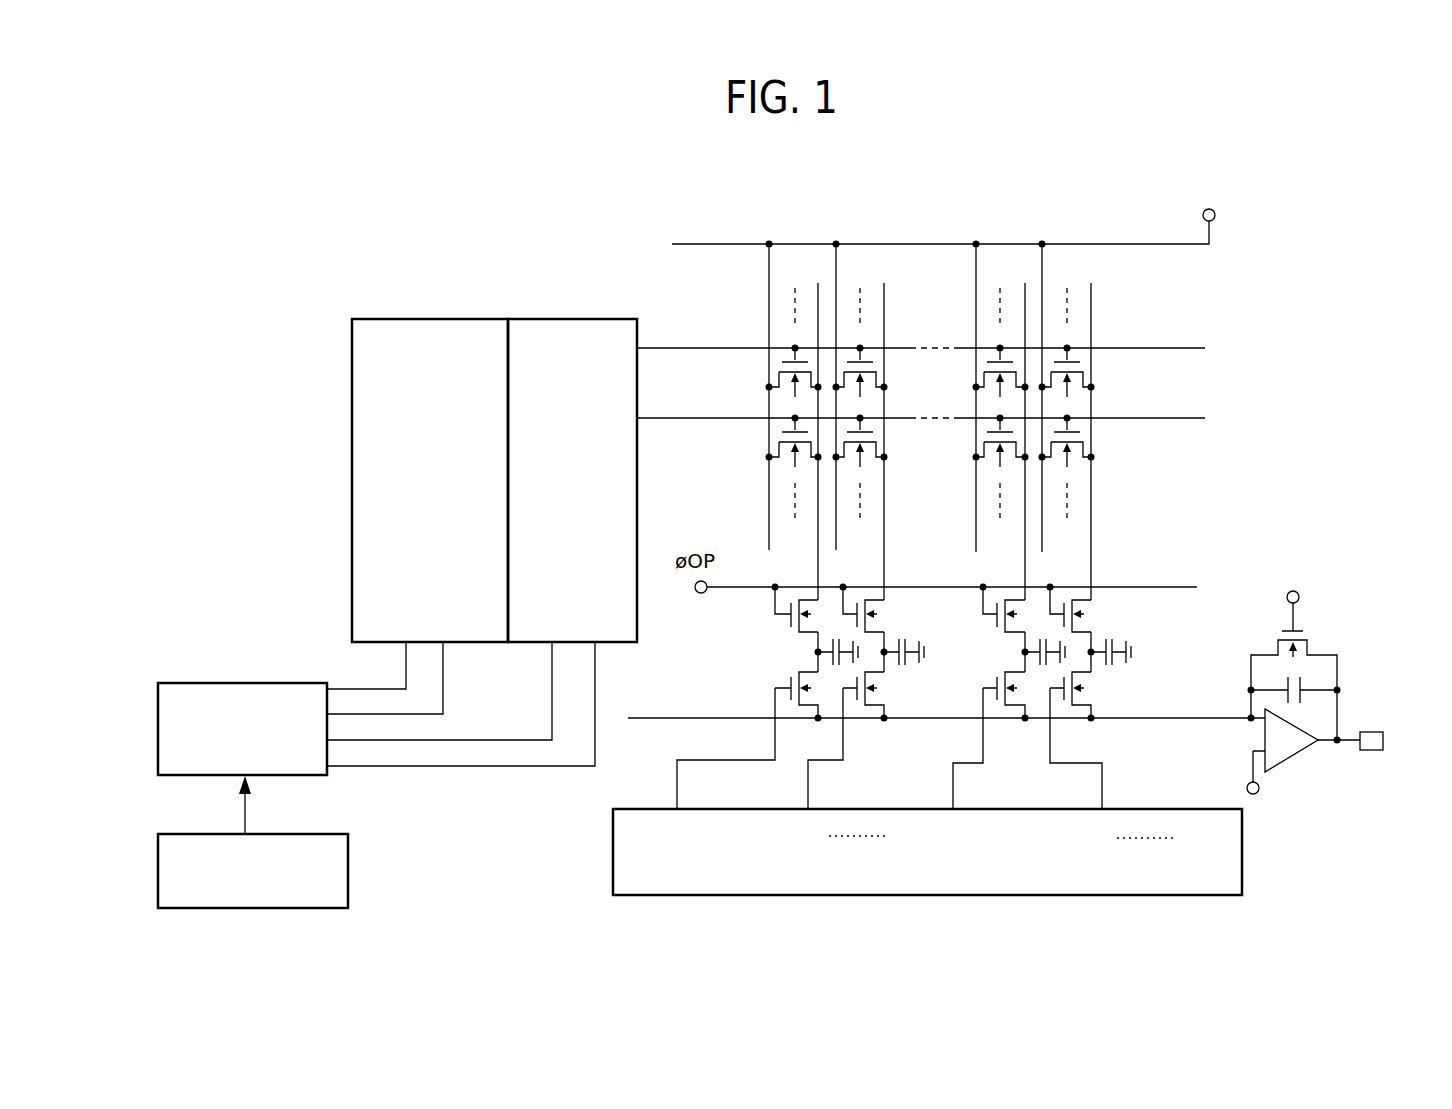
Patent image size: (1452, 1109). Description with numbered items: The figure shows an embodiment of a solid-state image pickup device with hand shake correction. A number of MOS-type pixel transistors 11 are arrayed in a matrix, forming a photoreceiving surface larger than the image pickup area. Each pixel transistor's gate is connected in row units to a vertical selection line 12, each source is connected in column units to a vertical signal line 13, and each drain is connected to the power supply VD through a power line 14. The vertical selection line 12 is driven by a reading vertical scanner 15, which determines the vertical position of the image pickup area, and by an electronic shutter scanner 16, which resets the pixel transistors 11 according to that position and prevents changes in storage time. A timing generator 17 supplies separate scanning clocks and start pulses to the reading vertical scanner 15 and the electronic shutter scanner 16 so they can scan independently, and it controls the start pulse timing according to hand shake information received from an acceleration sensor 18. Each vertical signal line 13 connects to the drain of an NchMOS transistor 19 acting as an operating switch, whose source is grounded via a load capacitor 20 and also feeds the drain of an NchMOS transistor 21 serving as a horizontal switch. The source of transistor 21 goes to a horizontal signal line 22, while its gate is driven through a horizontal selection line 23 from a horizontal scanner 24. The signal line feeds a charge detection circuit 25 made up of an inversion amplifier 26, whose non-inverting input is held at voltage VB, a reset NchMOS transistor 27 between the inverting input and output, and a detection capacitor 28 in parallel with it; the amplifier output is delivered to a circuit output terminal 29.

The pixel transistor 11 is at (1103, 336).
The vertical selection line 12 is at (1112, 418).
The vertical signal line 13 is at (1092, 507).
The power line 14 is at (837, 281).
The reading vertical scanner 15 is at (570, 319).
The electronic shutter scanner 16 is at (430, 319).
The timing generator 17 is at (158, 727).
The acceleration sensor 18 is at (158, 870).
The NchMOS transistor 19 is at (884, 605).
The load capacitor 20 is at (902, 630).
The NchMOS transistor 21 is at (884, 694).
The horizontal signal line 22 is at (634, 718).
The horizontal selection line 23 is at (1050, 735).
The horizontal scanner 24 is at (613, 845).
The charge detection circuit 25 is at (1325, 640).
The inversion amplifier 26 is at (1297, 757).
The NchMOS transistor 27 is at (1280, 653).
The detection capacitor 28 is at (1297, 668).
The circuit output terminal 29 is at (1366, 752).